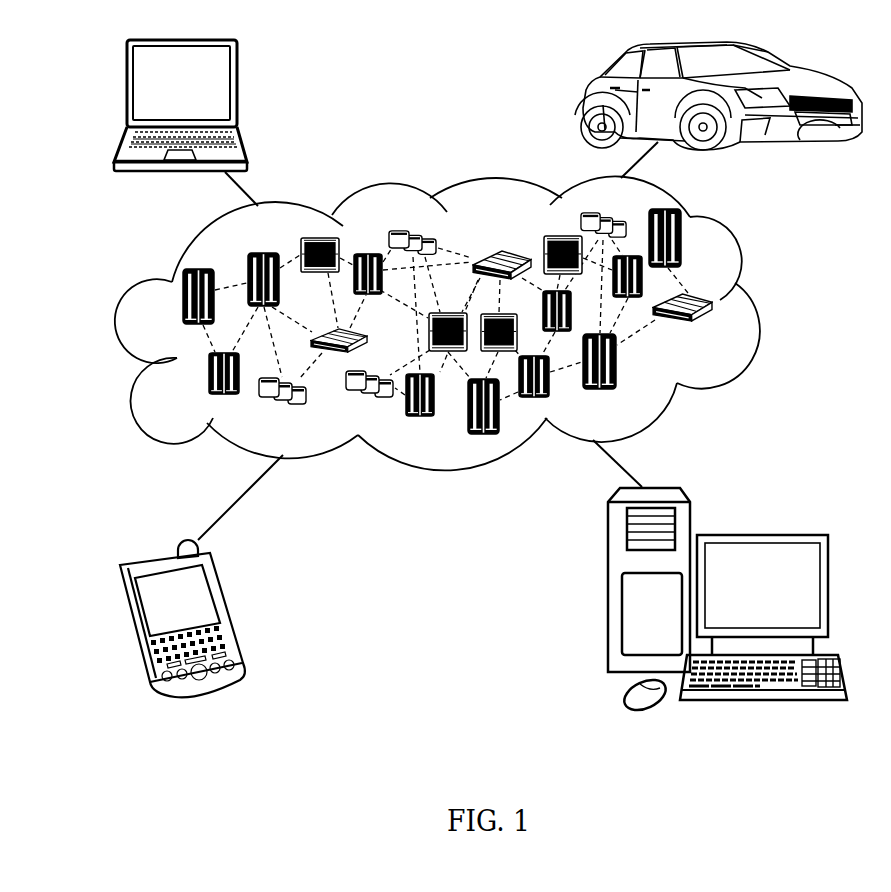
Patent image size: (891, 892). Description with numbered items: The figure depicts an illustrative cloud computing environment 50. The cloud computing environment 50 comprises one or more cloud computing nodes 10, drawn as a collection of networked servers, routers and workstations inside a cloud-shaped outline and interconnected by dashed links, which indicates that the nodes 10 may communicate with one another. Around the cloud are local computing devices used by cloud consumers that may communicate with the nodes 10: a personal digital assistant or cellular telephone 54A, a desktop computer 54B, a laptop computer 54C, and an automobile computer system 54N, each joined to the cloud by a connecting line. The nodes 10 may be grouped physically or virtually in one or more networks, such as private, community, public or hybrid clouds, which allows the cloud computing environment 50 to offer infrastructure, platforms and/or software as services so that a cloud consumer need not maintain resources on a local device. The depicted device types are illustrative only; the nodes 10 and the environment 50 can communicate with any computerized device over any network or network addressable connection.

The cloud computing nodes 10 is at (718, 331).
The cloud computing environment 50 is at (761, 303).
The personal digital assistant or cellular telephone 54A is at (229, 609).
The desktop computer 54B is at (760, 536).
The laptop computer 54C is at (238, 88).
The automobile computer system 54N is at (586, 100).